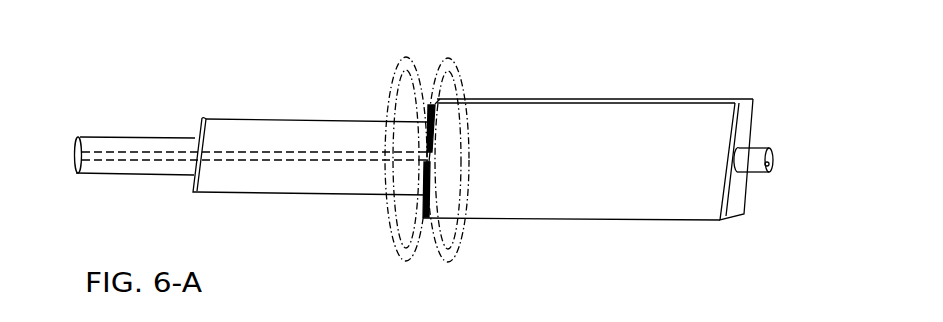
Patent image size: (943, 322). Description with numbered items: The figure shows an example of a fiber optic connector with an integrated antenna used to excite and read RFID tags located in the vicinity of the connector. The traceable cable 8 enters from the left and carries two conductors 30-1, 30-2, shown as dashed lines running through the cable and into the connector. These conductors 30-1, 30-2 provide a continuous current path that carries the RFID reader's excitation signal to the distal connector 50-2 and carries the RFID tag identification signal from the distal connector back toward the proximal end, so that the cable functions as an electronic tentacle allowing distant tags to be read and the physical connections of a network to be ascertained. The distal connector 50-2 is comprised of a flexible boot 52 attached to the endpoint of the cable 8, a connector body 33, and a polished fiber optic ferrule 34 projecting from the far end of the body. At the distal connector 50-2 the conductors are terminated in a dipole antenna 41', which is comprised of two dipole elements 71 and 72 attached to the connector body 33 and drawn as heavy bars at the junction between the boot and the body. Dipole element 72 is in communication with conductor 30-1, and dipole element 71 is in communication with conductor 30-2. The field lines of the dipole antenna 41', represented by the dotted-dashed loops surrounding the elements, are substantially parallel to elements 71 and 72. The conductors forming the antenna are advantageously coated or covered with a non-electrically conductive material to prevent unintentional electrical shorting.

The traceable cable 8 is at (64, 161).
The conductor 30-1 is at (177, 152).
The conductor 30-2 is at (173, 158).
The flexible boot 52 is at (278, 137).
The dipole element 72 is at (427, 122).
The dipole element 71 is at (430, 195).
The dipole antenna 41' is at (474, 138).
The connector body 33 is at (590, 132).
The polished fiber optic ferrule 34 is at (757, 155).
The distal connector 50-2 is at (565, 227).